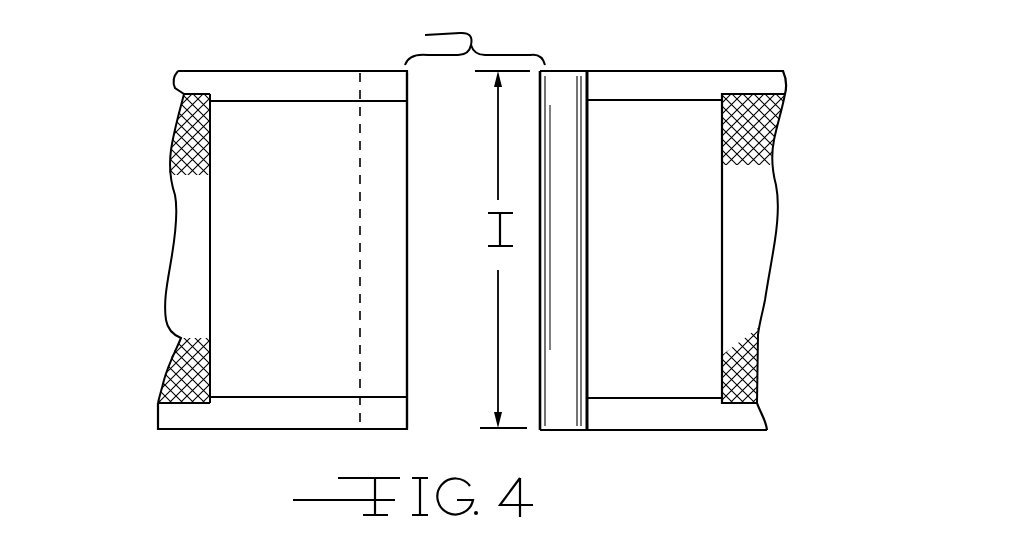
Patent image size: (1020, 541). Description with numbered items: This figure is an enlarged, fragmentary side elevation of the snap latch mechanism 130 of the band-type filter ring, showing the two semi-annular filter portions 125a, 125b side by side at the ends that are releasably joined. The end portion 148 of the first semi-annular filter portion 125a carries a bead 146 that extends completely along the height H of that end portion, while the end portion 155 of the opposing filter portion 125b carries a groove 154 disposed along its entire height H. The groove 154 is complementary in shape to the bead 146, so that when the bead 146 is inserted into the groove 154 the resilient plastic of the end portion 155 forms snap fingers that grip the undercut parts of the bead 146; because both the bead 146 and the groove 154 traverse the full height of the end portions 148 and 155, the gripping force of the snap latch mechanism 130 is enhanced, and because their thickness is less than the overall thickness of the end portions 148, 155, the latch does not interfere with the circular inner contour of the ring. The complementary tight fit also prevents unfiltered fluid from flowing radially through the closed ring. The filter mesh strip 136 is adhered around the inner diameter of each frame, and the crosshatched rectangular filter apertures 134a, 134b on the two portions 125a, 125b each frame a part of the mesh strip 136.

The semi-annular filter portion 125a is at (655, 58).
The semi-annular filter portion 125b is at (250, 62).
The snap latch mechanism 130 is at (447, 39).
The bead 146 is at (604, 148).
The end portion 148 is at (672, 248).
The end portion 155 is at (312, 247).
The groove 154 is at (410, 326).
The filter mesh strip 136 is at (190, 203).
The first seal 134a is at (178, 368).
The second seal 134b is at (752, 381).